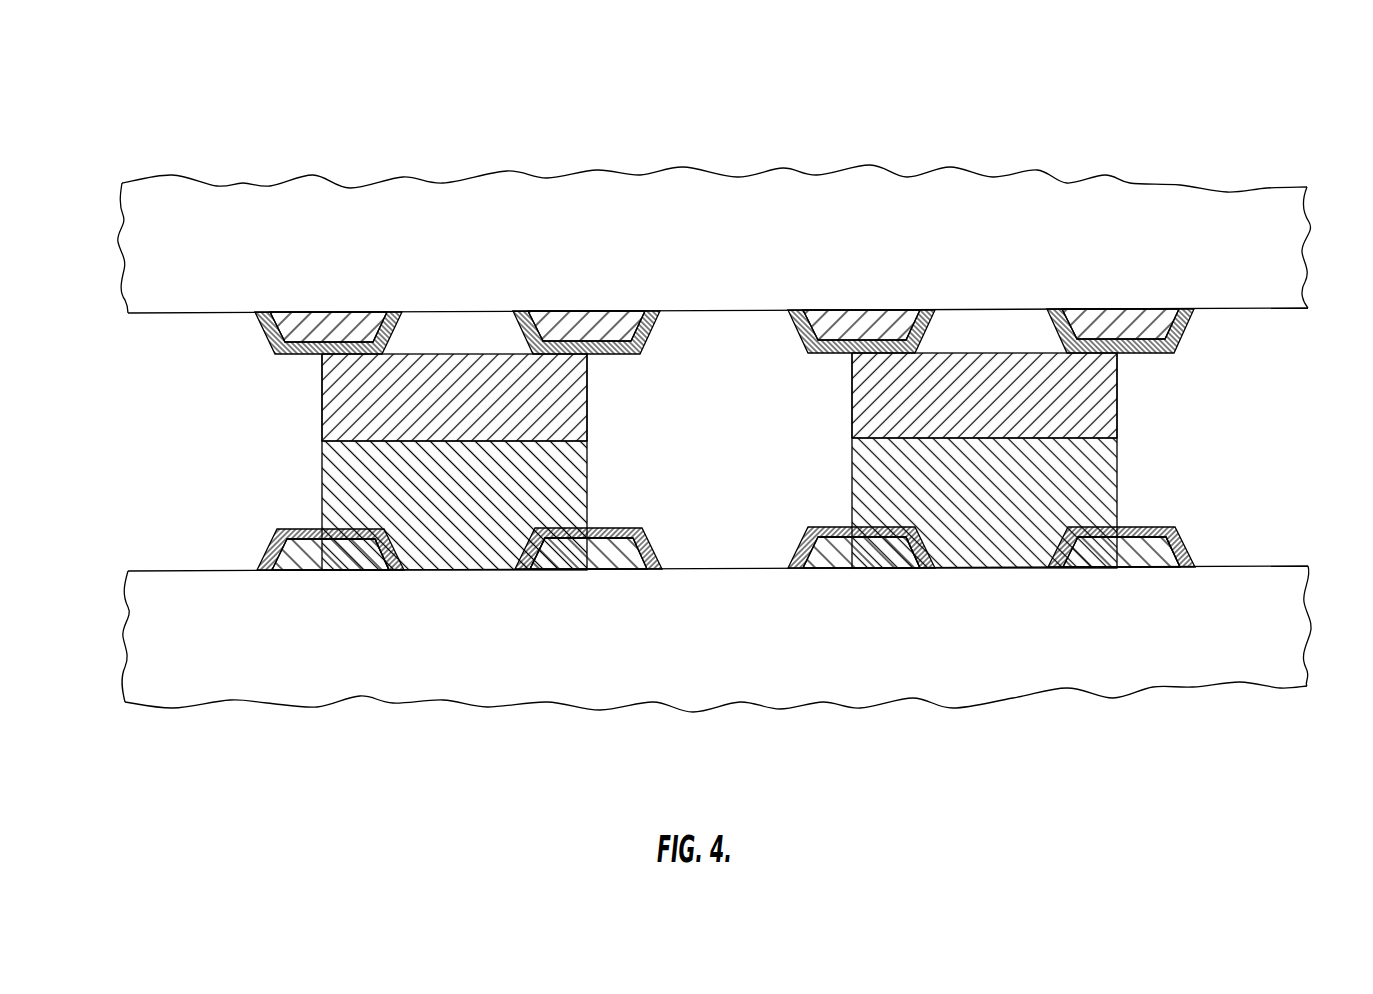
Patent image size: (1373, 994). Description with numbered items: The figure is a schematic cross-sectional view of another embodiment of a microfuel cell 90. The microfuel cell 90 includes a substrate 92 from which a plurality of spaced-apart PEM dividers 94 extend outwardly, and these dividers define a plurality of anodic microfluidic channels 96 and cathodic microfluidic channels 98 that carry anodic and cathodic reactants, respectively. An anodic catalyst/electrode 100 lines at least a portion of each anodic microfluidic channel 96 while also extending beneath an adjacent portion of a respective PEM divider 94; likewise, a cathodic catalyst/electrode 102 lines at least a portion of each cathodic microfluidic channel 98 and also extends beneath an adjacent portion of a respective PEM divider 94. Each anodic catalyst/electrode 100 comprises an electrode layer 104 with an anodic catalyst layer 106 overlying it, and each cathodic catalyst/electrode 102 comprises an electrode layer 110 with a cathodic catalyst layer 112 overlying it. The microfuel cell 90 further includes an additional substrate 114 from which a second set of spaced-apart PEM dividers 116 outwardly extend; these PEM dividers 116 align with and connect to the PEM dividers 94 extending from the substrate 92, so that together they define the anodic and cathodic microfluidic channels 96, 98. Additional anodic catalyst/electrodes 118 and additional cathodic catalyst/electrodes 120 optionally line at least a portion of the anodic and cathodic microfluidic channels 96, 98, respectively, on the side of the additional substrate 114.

The microfuel cell 90 is at (1167, 143).
The substrate 92 is at (120, 637).
The PEM dividers 94 is at (322, 487).
The anodic microfluidic channels 96 is at (230, 432).
The cathodic microfluidic channels 98 is at (737, 550).
The anodic catalyst/electrode 100 is at (255, 556).
The cathodic catalyst/electrode 102 is at (520, 552).
The electrode layer 104 is at (335, 565).
The anodic catalyst layer 106 is at (290, 572).
The electrode layer 110 is at (578, 563).
The cathodic catalyst layer 112 is at (545, 560).
The additional substrate 114 is at (117, 221).
The PEM dividers 116 is at (322, 390).
The additional anodic catalyst/electrodes 118 is at (257, 335).
The additional cathodic catalyst/electrodes 120 is at (662, 330).